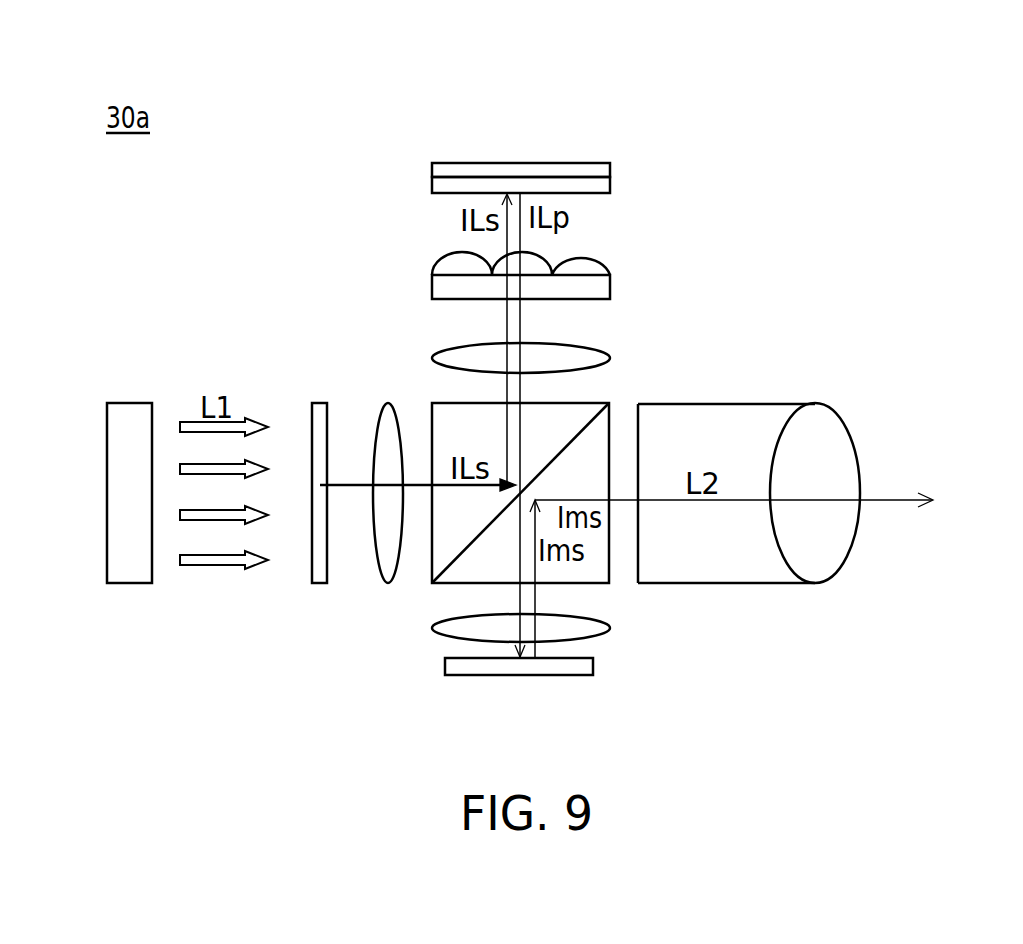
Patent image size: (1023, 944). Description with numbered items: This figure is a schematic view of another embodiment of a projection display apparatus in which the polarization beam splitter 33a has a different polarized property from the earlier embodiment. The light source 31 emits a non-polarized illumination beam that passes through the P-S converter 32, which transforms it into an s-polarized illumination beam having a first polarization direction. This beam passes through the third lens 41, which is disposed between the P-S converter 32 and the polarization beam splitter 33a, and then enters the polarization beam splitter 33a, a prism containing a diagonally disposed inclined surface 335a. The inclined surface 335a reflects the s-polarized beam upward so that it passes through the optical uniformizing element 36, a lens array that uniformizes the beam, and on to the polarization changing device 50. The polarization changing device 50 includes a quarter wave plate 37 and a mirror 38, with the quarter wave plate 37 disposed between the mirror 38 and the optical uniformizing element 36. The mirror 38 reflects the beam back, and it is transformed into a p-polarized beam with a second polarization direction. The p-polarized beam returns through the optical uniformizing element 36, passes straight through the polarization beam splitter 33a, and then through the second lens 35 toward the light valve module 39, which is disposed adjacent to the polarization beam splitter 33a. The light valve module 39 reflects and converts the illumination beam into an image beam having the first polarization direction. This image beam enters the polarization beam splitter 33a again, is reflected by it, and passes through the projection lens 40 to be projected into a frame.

The light source 31 is at (128, 583).
The P-S converter 32 is at (319, 583).
The third lens 41 is at (385, 583).
The polarization beam splitter 33a is at (611, 567).
The inclined surface 335a is at (595, 417).
The optical uniformizing element 36 is at (432, 296).
The quarter wave plate 37 is at (432, 190).
The mirror 38 is at (432, 163).
The polarization changing device 50 is at (446, 163).
The second lens 35 is at (605, 641).
The light valve module 39 is at (518, 675).
The projection lens 40 is at (858, 447).